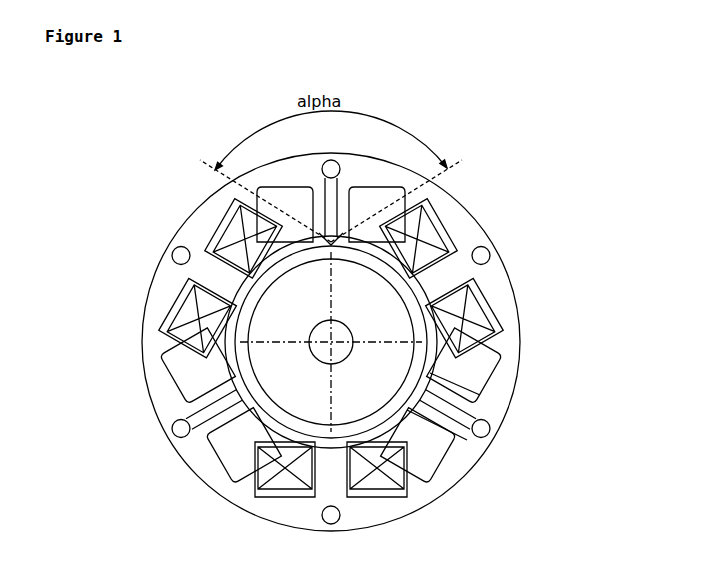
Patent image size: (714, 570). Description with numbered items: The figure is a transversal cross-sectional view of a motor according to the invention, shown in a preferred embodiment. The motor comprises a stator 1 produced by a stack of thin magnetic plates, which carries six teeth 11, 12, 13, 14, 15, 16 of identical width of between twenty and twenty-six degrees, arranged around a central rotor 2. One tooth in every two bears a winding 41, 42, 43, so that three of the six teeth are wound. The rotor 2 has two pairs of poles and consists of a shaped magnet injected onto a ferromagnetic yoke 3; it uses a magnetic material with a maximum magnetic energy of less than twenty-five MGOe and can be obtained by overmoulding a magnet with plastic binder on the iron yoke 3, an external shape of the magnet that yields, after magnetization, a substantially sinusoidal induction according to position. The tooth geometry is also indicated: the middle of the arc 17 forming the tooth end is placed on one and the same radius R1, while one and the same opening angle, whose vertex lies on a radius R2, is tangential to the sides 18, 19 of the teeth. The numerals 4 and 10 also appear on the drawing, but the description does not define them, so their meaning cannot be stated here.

The stator 1 is at (470, 205).
The rotor 2 is at (412, 357).
The ferromagnetic yoke 3 is at (290, 305).
The pole shoe 4 is at (230, 437).
The stator 10 is at (245, 495).
The tooth 11 is at (447, 280).
The tooth 12 is at (455, 433).
The tooth 13 is at (340, 505).
The tooth 14 is at (197, 407).
The tooth 15 is at (233, 287).
The tooth 16 is at (343, 240).
The arc 17 is at (470, 405).
The tooth side 18 is at (472, 388).
The tooth side 19 is at (420, 425).
The winding 41 is at (490, 317).
The winding 42 is at (430, 497).
The winding 43 is at (232, 362).
The radius R1 is at (331, 342).
The radius R2 is at (331, 342).